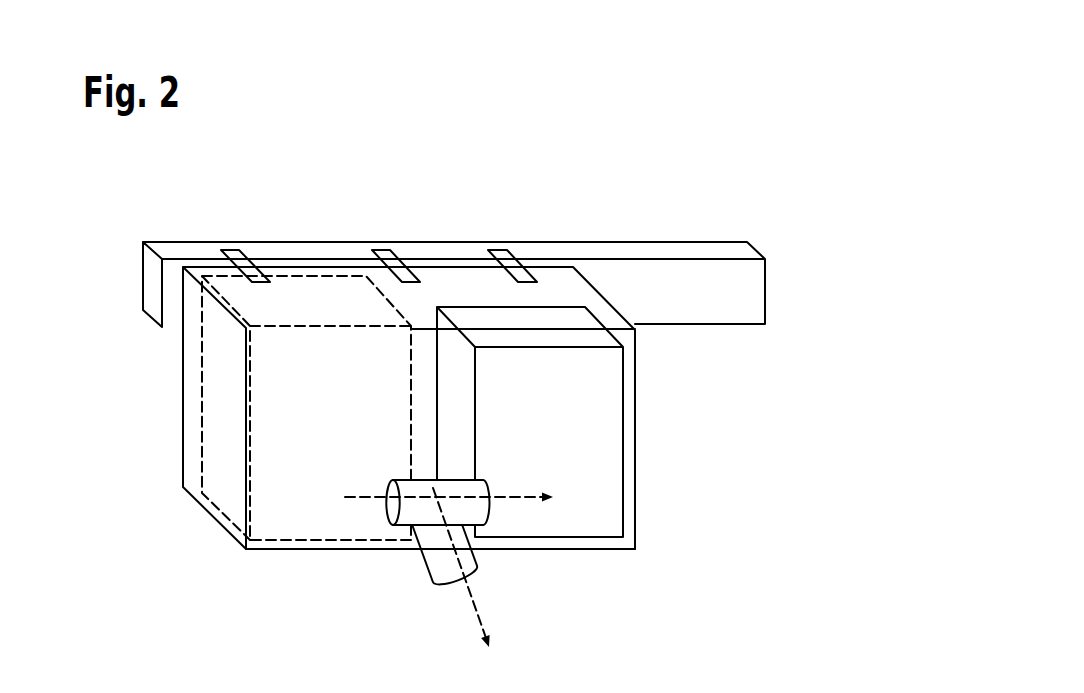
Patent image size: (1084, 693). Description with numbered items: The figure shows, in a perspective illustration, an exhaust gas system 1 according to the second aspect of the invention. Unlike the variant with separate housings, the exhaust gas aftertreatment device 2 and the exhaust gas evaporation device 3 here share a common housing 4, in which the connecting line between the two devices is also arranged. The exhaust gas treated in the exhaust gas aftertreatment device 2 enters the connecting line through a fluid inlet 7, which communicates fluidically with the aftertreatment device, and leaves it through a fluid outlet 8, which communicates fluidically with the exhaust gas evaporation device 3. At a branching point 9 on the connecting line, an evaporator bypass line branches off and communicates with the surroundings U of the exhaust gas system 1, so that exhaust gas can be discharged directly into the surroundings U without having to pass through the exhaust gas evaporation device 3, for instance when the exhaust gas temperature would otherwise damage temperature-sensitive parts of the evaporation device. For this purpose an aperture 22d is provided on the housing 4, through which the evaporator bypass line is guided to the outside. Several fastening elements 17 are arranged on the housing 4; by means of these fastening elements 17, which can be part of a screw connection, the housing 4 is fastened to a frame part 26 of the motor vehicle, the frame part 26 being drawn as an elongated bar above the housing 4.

The exhaust gas system 1 is at (872, 186).
The exhaust gas aftertreatment device 2 is at (220, 402).
The exhaust gas evaporation device 3 is at (593, 450).
The housing 4 is at (268, 550).
The fluid inlet 7 is at (392, 508).
The fluid outlet 8 is at (490, 508).
The branching point 9 is at (440, 486).
The fastening element 17 is at (230, 234).
The aperture 22d is at (410, 561).
The frame part 26 is at (720, 252).
The surroundings U is at (437, 662).